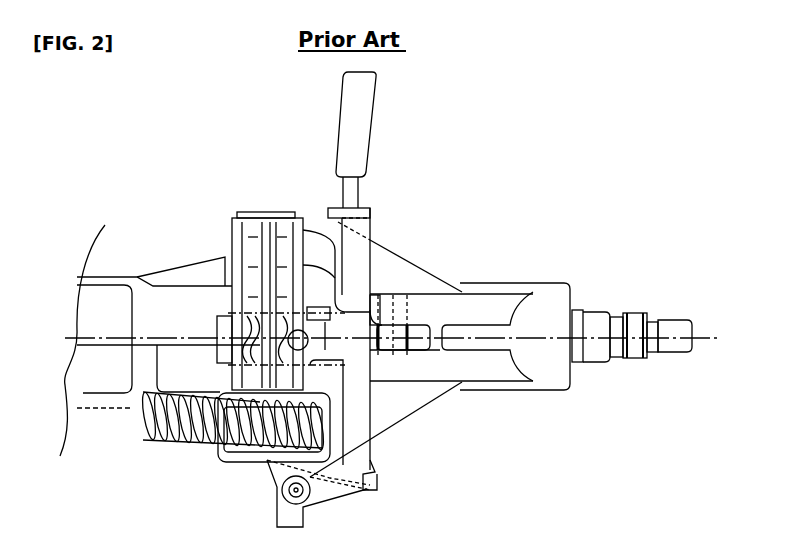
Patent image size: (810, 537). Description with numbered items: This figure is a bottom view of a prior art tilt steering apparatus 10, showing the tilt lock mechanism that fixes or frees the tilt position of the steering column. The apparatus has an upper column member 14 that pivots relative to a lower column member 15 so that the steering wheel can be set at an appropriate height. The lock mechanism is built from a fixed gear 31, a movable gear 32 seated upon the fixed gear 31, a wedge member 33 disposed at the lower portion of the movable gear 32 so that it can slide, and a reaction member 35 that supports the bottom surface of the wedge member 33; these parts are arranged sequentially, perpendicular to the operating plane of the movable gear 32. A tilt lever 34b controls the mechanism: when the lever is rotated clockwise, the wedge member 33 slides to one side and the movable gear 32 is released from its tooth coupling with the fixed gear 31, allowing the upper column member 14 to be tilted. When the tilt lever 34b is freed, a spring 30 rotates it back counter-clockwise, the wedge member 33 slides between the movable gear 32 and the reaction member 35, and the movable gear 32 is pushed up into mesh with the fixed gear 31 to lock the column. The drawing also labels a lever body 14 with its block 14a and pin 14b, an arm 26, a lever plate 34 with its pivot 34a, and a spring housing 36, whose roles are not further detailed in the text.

The gear shift device 10 is at (425, 105).
The upper column member 14 is at (411, 262).
The shift lever block body 14a is at (438, 302).
The shift lever pivot pin 14b is at (410, 300).
The lower column member 15 is at (149, 275).
The lever arm 26 is at (403, 386).
The spring 30 is at (168, 440).
The fixed gear 31 is at (232, 313).
The movable gear 32 is at (218, 334).
The wedge member 33 is at (318, 330).
The lock plate 34 is at (362, 258).
The lock plate pivot 34a is at (305, 503).
The tilt lever 34b is at (353, 150).
The reaction member 35 is at (286, 301).
The spring housing 36 is at (228, 460).